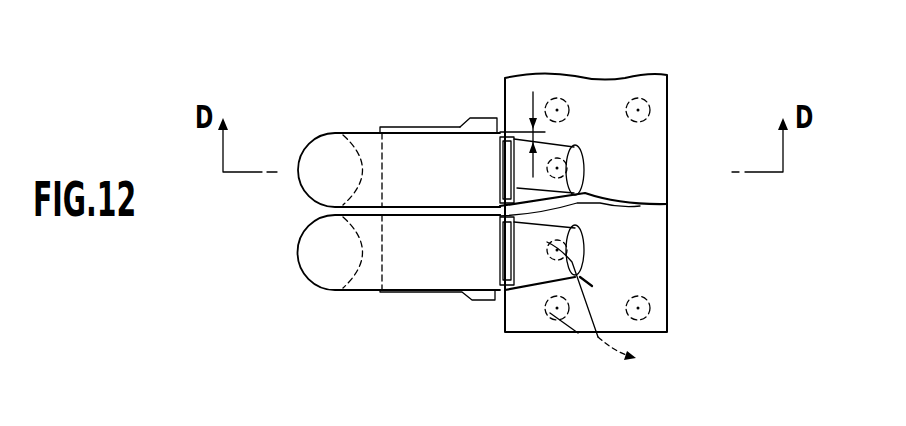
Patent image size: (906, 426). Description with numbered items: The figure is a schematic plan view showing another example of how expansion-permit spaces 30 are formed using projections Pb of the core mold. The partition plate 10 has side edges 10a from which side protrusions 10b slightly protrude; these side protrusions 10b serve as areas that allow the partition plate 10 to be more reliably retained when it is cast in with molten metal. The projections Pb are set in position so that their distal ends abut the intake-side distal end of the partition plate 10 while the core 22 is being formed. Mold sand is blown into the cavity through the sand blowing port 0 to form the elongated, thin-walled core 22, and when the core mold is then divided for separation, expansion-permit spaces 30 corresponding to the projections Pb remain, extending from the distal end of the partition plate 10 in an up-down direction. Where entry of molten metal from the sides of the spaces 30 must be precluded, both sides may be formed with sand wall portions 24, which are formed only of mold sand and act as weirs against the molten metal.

The partition plate 10 is at (447, 150).
The side edges 10a is at (435, 126).
The side protrusions 10b is at (483, 118).
The core 22 is at (288, 248).
The sand wall portions 24 is at (496, 142).
The expansion-permit spaces 30 is at (505, 133).
The projections Pb is at (668, 197).
The sand blowing port 0 is at (601, 310).